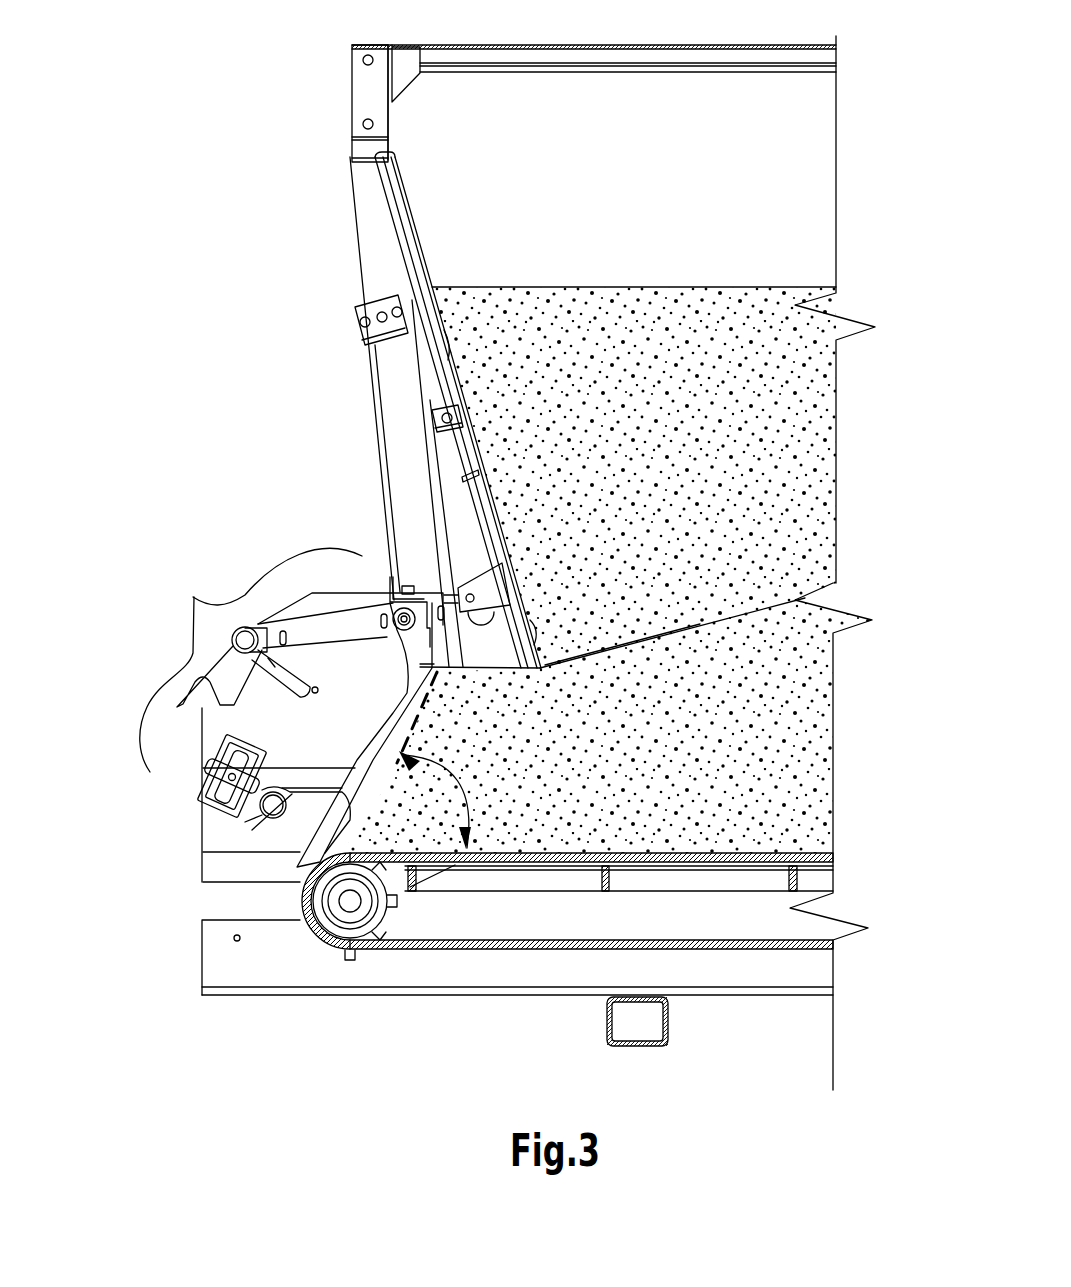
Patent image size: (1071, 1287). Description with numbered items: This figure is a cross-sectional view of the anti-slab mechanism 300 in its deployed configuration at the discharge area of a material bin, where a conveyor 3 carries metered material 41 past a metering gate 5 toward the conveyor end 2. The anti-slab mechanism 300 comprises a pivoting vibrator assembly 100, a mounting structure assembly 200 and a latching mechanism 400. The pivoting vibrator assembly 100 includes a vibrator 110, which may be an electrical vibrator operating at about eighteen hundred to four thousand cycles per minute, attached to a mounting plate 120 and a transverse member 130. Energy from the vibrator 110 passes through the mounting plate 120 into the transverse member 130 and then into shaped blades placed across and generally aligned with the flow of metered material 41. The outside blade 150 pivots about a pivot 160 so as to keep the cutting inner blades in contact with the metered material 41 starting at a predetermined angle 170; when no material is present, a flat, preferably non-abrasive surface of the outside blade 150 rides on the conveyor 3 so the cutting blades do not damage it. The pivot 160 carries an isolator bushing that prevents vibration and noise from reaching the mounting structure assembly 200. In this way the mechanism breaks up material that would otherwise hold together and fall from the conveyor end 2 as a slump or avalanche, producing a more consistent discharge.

The conveyor end 2 is at (300, 906).
The conveyor 3 is at (422, 863).
The metering gate 5 is at (543, 667).
The metered material 41 is at (718, 497).
The pivoting vibrator assembly 100 is at (152, 738).
The vibrator 110 is at (200, 798).
The mounting plate 120 is at (242, 818).
The transverse member 130 is at (260, 820).
The outside blade 150 is at (385, 722).
The pivot 160 is at (365, 595).
The predetermined angle 170 is at (460, 795).
The mounting structure assembly 200 is at (374, 536).
The anti-slab mechanism 300 is at (193, 597).
The latching mechanism 400 is at (232, 644).